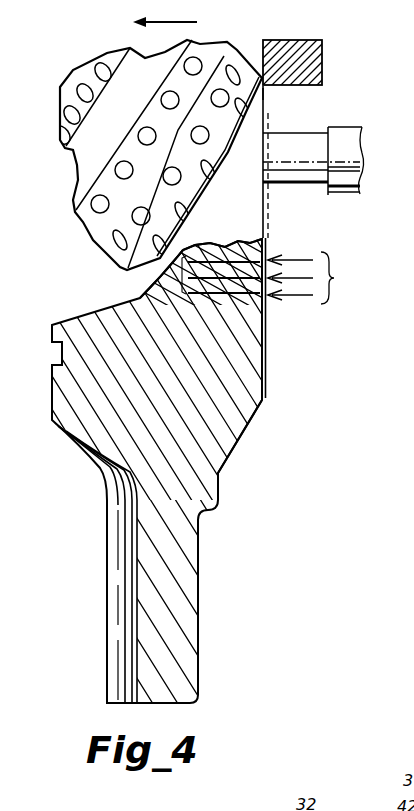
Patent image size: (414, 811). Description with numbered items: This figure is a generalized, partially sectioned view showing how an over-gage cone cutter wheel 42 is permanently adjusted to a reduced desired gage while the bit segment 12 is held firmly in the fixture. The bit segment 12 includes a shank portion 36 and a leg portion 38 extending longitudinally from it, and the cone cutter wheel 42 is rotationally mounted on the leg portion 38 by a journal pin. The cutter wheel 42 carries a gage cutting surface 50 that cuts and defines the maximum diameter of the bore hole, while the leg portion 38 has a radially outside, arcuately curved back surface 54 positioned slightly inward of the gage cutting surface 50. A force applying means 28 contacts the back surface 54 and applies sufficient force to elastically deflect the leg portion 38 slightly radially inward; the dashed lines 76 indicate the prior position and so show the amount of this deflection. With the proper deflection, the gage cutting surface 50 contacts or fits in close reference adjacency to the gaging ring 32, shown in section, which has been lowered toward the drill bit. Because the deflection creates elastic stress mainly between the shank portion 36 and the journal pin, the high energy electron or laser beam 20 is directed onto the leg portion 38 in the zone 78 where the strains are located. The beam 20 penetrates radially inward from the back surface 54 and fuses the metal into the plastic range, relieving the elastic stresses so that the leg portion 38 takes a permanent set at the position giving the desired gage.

The bit segment 12 is at (235, 543).
The high energy electron or laser beam 20 is at (315, 278).
The force applying means 28 is at (314, 133).
The gaging ring 32 is at (322, 62).
The shank portion 36 is at (220, 475).
The leg portion 38 is at (265, 239).
The cone cutter wheel 42 is at (95, 65).
The gage cutting surface 50 is at (264, 92).
The back surface 54 is at (252, 254).
The dashed lines 76 is at (265, 228).
The zone 78 is at (180, 275).